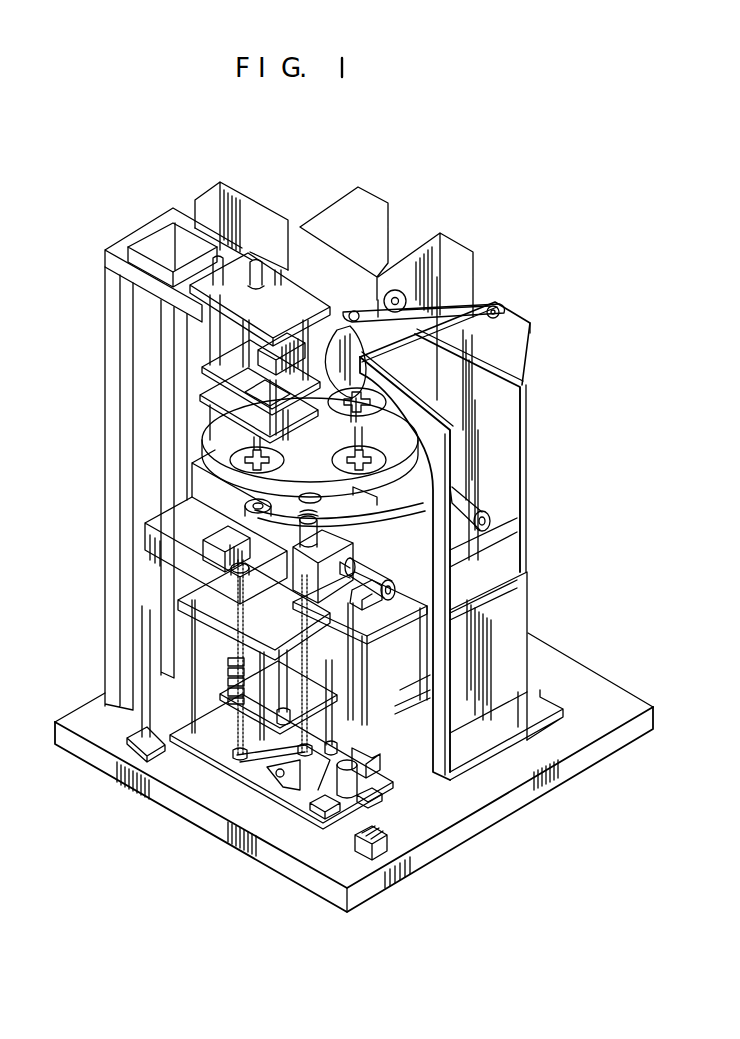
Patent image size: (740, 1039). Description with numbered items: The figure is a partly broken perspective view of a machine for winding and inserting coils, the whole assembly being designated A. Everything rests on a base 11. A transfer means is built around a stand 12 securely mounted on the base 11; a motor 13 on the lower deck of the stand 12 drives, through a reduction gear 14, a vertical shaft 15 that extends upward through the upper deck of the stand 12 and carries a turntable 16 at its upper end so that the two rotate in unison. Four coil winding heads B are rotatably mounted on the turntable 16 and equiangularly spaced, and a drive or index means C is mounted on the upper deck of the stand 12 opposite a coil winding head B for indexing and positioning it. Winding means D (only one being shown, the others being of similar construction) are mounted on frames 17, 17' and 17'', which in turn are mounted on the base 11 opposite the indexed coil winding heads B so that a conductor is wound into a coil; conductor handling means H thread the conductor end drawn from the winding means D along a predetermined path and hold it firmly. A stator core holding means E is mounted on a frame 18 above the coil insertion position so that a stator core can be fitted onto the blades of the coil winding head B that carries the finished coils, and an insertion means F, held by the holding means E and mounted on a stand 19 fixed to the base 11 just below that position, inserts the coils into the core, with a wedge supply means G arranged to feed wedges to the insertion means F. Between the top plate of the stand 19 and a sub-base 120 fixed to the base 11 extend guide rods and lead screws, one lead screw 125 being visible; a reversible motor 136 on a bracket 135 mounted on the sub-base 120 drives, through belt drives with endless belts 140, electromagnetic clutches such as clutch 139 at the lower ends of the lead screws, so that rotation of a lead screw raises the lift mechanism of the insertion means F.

The base 11 is at (492, 822).
The stand 12 is at (412, 680).
The motor 13 is at (382, 582).
The reduction gear 14 is at (328, 578).
The vertical shaft 15 is at (333, 531).
The turntable 16 is at (390, 466).
The frame 17 is at (461, 541).
The frame 17' is at (406, 293).
The frame 17'' is at (241, 221).
The frame 18 is at (104, 521).
The stand 19 is at (153, 520).
The sub-base 120 is at (183, 730).
The lead screw 125 is at (232, 750).
The bracket 135 is at (374, 760).
The reversible motor 136 is at (341, 808).
The electromagnetic clutch 139 is at (240, 772).
The endless belt 140 is at (280, 790).
The apparatus A is at (330, 167).
The coil winding head B is at (288, 462).
The drive or index means C is at (372, 496).
The winding means D is at (352, 326).
The stator core holding means E is at (292, 298).
The insertion means F is at (231, 648).
The wedge supply means G is at (210, 532).
The conductor handling means H is at (468, 506).